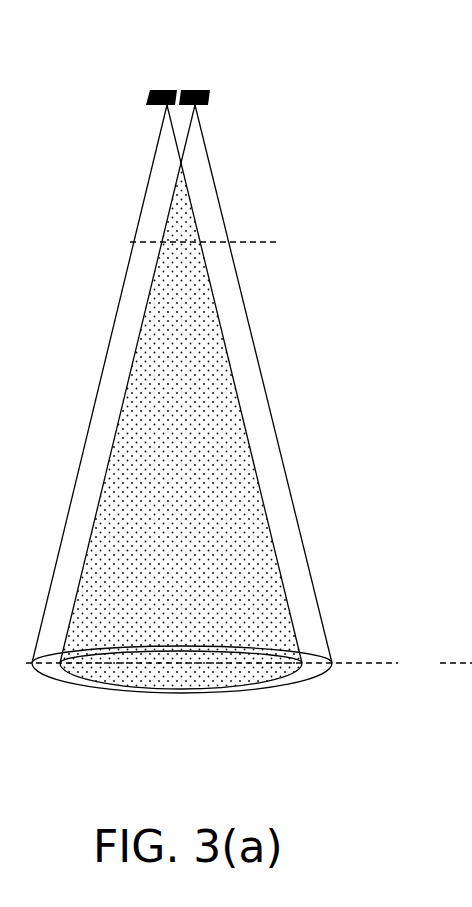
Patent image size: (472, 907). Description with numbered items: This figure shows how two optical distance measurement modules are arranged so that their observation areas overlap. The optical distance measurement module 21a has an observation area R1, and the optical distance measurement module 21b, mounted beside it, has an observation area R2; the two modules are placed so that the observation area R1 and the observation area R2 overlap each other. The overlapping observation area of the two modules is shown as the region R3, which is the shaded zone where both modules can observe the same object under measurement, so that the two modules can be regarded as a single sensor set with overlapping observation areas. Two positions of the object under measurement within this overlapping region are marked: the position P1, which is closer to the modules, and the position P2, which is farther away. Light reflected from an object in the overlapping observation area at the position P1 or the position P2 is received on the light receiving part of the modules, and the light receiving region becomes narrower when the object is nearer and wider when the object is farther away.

The optical distance measurement module 21a is at (160, 88).
The optical distance measurement module 21b is at (200, 88).
The observation area R1 is at (108, 343).
The observation area R2 is at (253, 338).
The overlapping observation area R3 is at (185, 680).
The position P1 is at (203, 228).
The position P2 is at (249, 651).